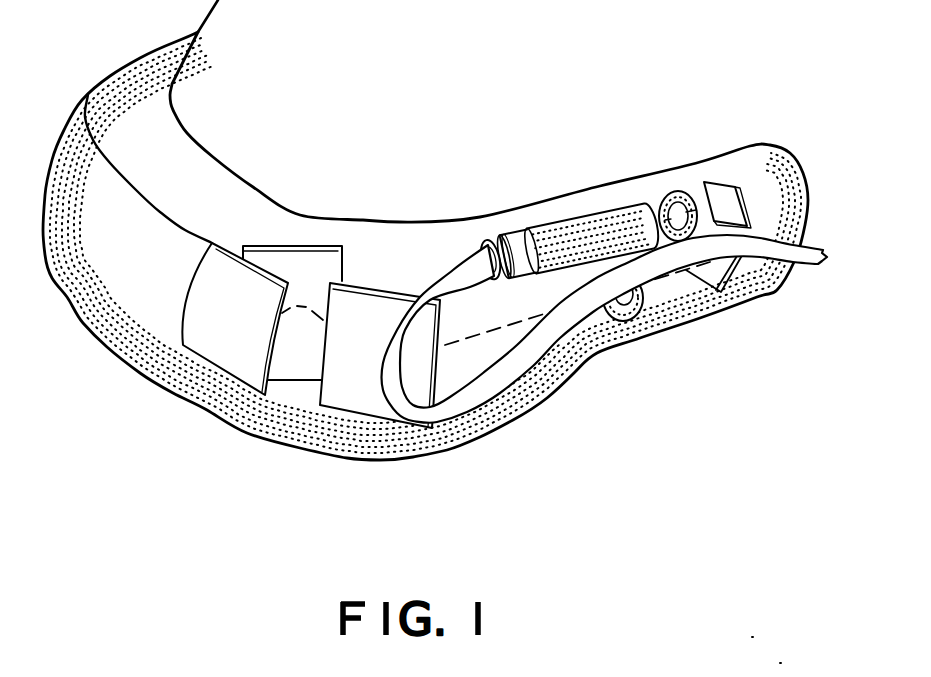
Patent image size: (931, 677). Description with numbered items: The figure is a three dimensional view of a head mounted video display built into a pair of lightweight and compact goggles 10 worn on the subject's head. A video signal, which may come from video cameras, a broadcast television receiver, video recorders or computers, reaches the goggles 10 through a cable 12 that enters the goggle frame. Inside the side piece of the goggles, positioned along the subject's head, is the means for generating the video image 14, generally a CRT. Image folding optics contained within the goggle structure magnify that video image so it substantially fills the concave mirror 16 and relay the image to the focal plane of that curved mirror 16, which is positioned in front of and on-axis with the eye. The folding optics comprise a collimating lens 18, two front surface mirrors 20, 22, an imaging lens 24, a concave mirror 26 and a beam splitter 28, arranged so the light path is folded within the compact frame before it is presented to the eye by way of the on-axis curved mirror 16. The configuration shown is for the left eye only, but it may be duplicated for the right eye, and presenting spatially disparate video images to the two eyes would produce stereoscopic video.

The goggles 10 is at (132, 360).
The cable 12 is at (527, 353).
The means for generating the video image 14 is at (587, 223).
The concave mirror 16 is at (203, 353).
The collimating lens 18 is at (678, 190).
The front surface mirror 20 is at (718, 193).
The front surface mirror 22 is at (717, 277).
The imaging lens 24 is at (633, 317).
The concave mirror 26 is at (363, 303).
The beam splitter 28 is at (292, 260).